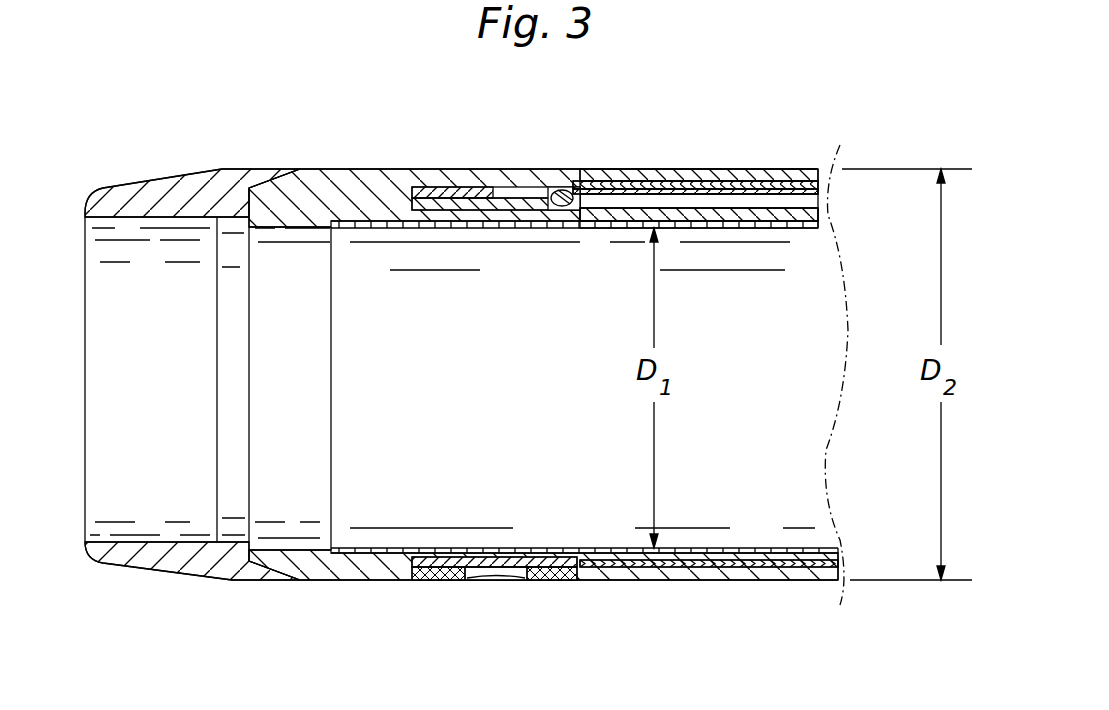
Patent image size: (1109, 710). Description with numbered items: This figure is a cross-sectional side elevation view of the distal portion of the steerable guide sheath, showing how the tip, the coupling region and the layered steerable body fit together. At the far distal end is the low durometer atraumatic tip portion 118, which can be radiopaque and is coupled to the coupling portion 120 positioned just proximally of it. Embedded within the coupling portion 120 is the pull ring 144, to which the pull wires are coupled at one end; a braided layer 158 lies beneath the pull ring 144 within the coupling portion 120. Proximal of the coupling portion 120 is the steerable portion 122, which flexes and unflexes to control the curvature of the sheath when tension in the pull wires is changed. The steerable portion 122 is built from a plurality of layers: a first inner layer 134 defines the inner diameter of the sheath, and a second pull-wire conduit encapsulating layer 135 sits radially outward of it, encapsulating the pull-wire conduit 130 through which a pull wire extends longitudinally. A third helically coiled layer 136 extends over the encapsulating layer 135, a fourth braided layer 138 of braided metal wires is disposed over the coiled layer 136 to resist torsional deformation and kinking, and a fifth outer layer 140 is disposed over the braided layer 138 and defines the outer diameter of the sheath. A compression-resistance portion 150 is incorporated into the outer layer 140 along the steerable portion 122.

The atraumatic tip portion 118 is at (143, 181).
The coupling portion 120 is at (360, 169).
The steerable portion 122 is at (798, 168).
The pull-wire conduit 130 is at (686, 203).
The inner layer 134 is at (787, 228).
The pull-wire conduit encapsulating layer 135 is at (800, 209).
The helically coiled layer 136 is at (660, 185).
The braided layer 138 is at (600, 185).
The outer layer 140 is at (760, 169).
The pull ring 144 is at (447, 187).
The compression-resistance portion 150 is at (770, 581).
The braided layer 158 is at (515, 200).